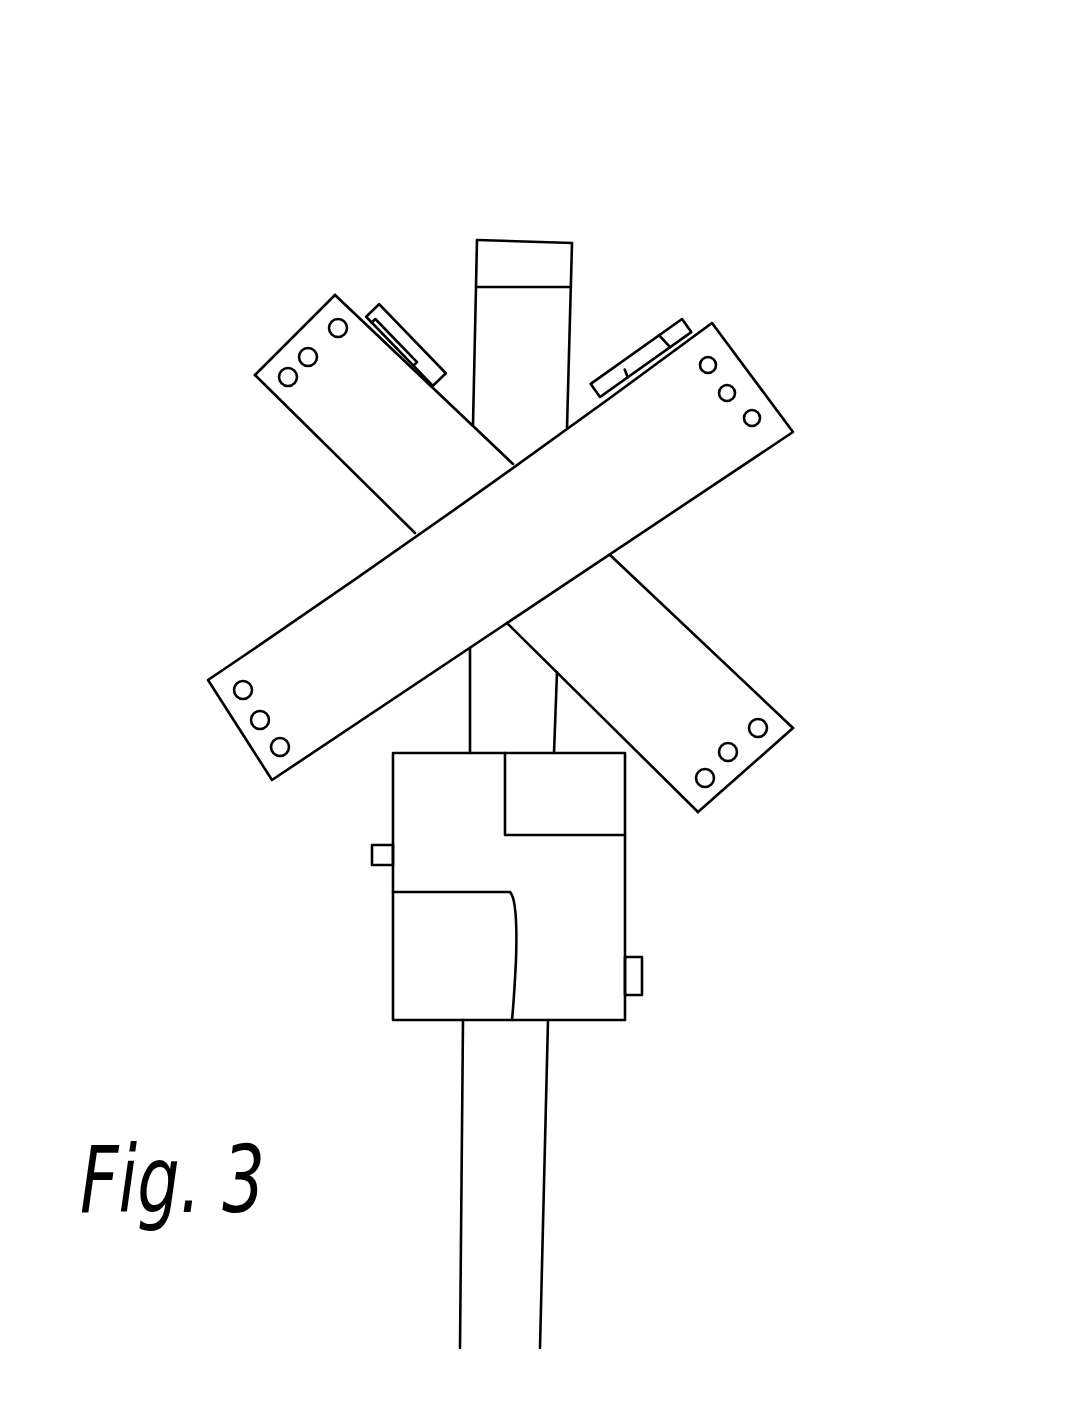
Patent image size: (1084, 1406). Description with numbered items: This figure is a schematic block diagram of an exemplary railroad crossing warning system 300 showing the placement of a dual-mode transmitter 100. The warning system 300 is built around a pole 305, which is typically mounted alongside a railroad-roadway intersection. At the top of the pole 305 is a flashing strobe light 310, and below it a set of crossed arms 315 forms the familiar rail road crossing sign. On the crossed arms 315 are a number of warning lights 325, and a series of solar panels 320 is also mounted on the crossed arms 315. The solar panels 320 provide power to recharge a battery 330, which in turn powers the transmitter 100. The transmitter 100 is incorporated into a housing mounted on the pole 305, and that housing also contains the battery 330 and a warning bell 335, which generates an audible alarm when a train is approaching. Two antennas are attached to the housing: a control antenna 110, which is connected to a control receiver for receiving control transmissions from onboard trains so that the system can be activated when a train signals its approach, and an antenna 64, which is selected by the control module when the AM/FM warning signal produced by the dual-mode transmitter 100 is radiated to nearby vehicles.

The warning system 300 is at (852, 96).
The pole 305 is at (570, 328).
The flashing strobe light 310 is at (570, 262).
The crossed arms 315 is at (667, 517).
The solar panels 320 is at (648, 337).
The warning lights 325 is at (716, 360).
The transmitter 100 is at (582, 903).
The warning bell 335 is at (582, 825).
The battery 330 is at (470, 984).
The control antenna 110 is at (372, 860).
The antenna 64 is at (642, 977).